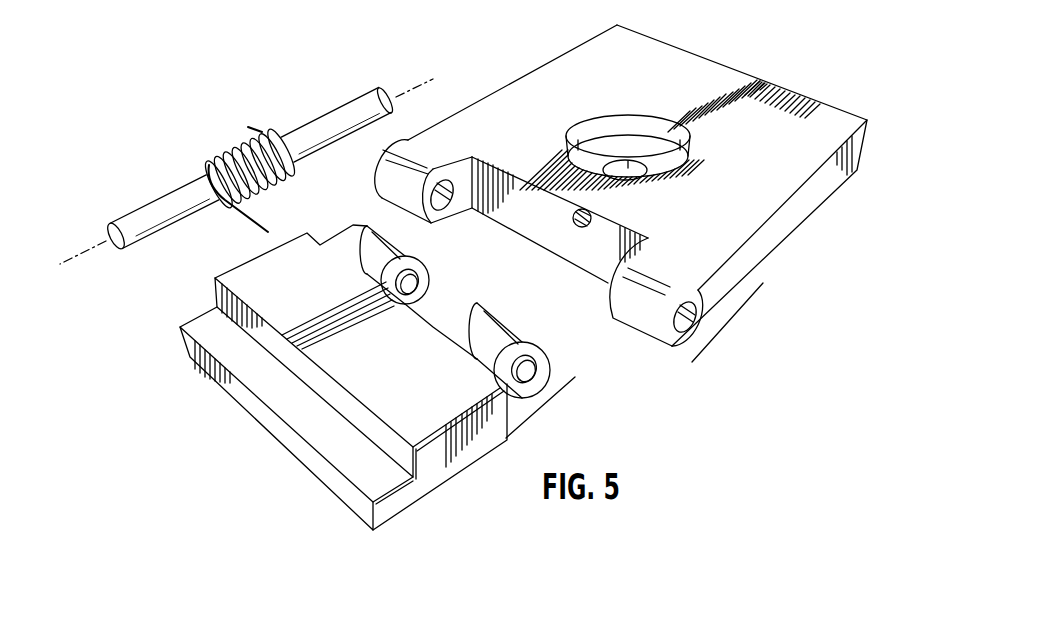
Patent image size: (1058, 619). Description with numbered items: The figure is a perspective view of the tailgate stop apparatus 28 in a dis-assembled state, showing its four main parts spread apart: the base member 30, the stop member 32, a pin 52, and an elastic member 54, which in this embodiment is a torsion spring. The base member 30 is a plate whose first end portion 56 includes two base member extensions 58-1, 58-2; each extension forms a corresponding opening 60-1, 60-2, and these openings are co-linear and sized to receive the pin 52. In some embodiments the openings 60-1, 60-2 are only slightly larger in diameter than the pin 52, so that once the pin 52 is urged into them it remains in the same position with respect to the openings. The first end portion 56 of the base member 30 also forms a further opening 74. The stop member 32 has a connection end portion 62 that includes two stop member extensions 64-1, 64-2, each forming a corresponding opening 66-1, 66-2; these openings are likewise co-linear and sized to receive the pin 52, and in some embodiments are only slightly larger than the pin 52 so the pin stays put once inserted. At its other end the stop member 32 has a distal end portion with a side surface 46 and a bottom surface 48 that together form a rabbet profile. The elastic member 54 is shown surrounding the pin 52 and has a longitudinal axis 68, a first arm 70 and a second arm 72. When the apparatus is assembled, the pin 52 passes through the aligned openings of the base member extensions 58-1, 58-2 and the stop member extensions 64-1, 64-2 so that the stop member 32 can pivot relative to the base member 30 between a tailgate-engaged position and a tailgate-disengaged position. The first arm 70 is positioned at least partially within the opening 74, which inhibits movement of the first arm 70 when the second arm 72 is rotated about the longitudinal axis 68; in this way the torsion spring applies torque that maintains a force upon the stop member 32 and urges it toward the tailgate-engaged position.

The apparatus 28 is at (735, 47).
The base member 30 is at (838, 116).
The stop member 32 is at (360, 381).
The side surface 46 is at (196, 325).
The bottom surface 48 is at (222, 298).
The pin 52 is at (355, 105).
The elastic member 54 is at (216, 160).
The first end portion 56 is at (728, 322).
The base member extension 58-1 is at (657, 270).
The base member extension 58-2 is at (428, 160).
The opening 60-1 is at (697, 320).
The opening 60-2 is at (447, 205).
The connection end portion 62 is at (544, 407).
The stop member extension 64-1 is at (488, 323).
The stop member extension 64-2 is at (358, 240).
The opening 66-1 is at (528, 375).
The opening 66-2 is at (412, 287).
The longitudinal axis 68 is at (97, 250).
The first arm 70 is at (262, 222).
The second arm 72 is at (258, 130).
The opening 74 is at (573, 228).